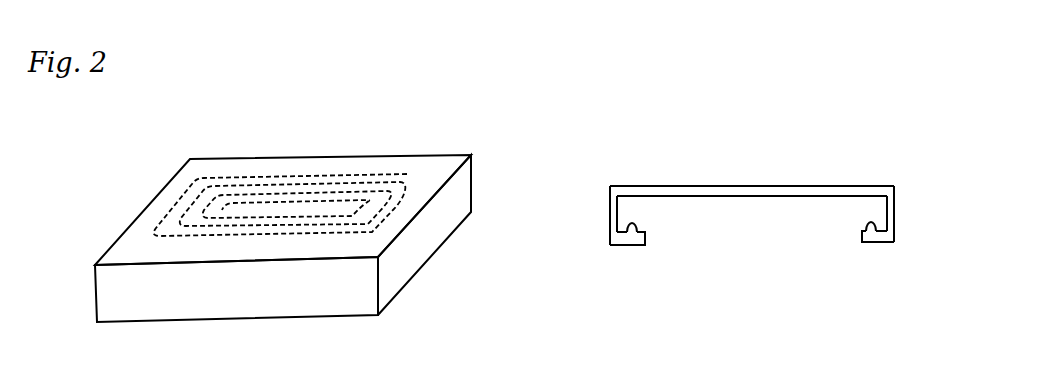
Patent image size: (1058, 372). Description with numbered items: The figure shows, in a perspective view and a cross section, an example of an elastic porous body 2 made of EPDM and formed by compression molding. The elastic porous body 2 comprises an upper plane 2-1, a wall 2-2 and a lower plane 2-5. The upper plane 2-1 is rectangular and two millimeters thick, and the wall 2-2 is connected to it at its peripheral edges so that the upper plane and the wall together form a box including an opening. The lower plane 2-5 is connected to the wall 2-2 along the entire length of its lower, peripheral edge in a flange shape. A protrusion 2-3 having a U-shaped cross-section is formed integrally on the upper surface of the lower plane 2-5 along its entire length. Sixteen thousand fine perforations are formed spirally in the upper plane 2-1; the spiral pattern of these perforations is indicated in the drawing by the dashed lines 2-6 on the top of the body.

The elastic porous body 2 is at (213, 158).
The upper plane 2-1 is at (425, 165).
The wall 2-2 is at (467, 192).
The protrusion 2-3 is at (645, 229).
The lower plane 2-5 is at (647, 242).
The antenna coil 2-6 is at (273, 178).